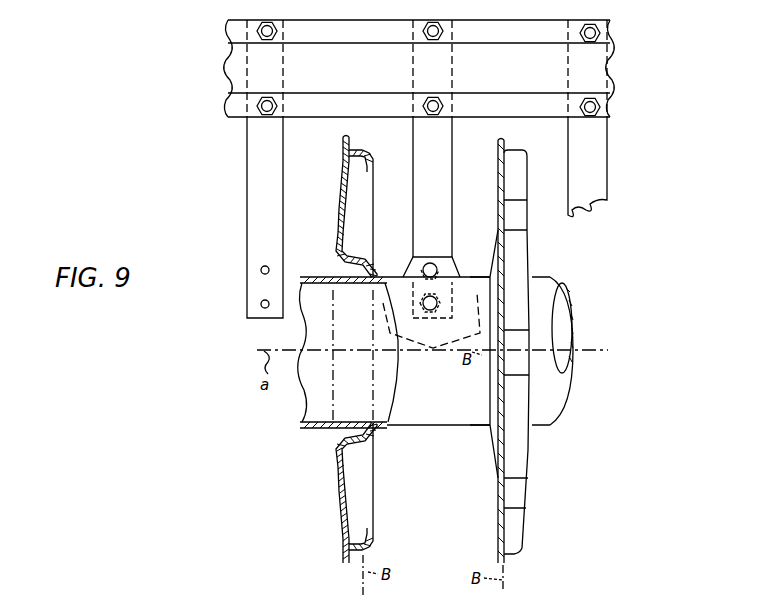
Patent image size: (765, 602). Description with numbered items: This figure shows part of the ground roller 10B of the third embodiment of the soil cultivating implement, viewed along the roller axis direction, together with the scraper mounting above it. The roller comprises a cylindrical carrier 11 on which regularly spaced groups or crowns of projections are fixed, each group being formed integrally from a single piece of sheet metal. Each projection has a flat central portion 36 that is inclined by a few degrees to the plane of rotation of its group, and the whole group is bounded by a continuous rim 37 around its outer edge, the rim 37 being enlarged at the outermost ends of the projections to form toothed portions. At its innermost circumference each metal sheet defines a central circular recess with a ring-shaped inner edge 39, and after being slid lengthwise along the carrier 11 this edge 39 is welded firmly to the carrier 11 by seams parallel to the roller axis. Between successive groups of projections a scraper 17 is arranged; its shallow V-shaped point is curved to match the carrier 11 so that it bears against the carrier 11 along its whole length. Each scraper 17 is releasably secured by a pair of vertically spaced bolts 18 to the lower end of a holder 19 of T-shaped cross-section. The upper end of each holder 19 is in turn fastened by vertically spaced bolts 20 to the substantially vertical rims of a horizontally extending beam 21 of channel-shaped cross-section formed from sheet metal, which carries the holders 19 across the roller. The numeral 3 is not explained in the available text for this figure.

The beam 21 is at (228, 65).
The bolts 20 is at (446, 106).
The holder 19 is at (247, 165).
The rim 37 is at (343, 147).
The flat central portion 36 is at (339, 205).
The ring-shaped inner edge 39 is at (337, 272).
The bolts 18 is at (446, 257).
The scraper 17 is at (440, 348).
The carrier 11 is at (310, 405).
The sleeve 3 is at (394, 378).
The ground roller 10B is at (462, 521).